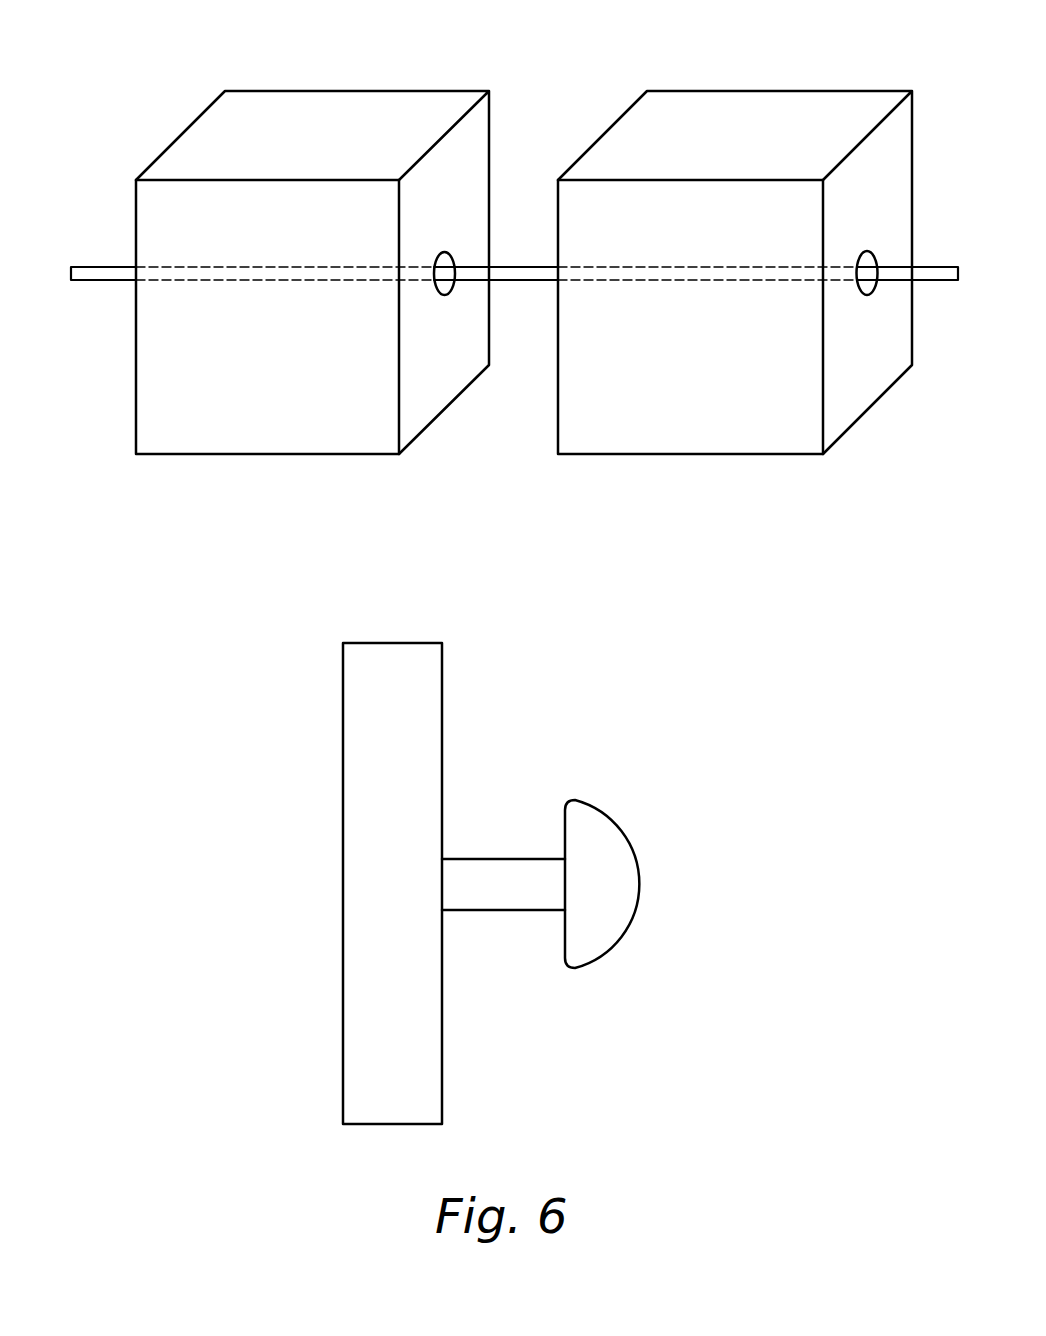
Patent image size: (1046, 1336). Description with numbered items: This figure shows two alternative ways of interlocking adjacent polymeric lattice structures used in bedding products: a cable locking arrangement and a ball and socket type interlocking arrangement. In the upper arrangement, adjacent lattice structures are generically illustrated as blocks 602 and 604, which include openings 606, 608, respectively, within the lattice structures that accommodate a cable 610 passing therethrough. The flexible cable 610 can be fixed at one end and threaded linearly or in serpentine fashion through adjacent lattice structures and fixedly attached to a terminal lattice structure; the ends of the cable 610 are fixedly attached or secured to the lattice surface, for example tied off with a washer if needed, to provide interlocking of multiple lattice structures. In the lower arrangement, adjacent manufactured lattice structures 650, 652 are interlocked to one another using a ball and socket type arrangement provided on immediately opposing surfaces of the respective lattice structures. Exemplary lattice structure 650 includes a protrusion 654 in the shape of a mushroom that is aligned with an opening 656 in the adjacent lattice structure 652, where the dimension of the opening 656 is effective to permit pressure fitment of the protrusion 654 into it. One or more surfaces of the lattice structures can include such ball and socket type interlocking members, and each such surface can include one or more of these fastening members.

The block 602 is at (312, 231).
The block 604 is at (735, 231).
The opening 606 is at (449, 292).
The opening 608 is at (871, 292).
The cable 610 is at (105, 272).
The lattice structure 650 is at (342, 842).
The lattice structure 652 is at (614, 795).
The protrusion 654 is at (675, 862).
The opening 656 is at (540, 935).